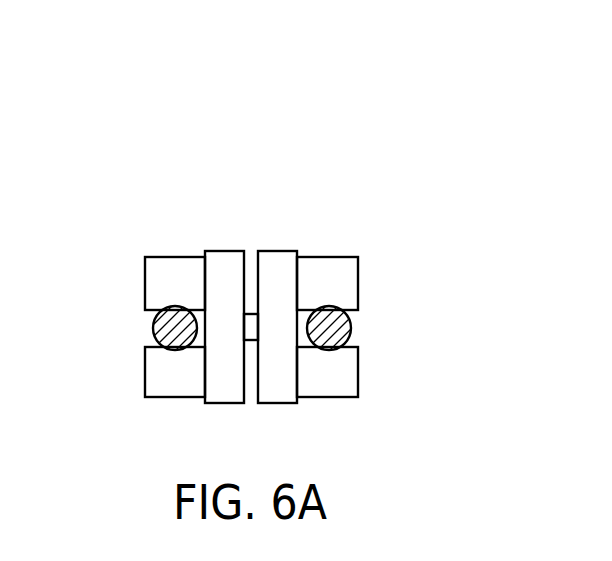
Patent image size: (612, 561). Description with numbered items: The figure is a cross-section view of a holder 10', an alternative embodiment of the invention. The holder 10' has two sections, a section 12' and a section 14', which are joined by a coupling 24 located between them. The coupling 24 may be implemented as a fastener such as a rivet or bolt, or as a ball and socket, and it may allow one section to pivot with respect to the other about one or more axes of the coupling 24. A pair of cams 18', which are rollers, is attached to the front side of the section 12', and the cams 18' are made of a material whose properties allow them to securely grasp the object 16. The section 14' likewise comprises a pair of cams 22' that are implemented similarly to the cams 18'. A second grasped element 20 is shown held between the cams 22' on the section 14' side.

The holder 10' is at (448, 153).
The section 12' is at (219, 291).
The section 14' is at (285, 291).
The object 16 is at (157, 322).
The cams (rollers) 18' is at (136, 327).
The second O-ring seal 20 is at (350, 323).
The cams (rollers) 22' is at (370, 327).
The coupling 24 is at (248, 320).